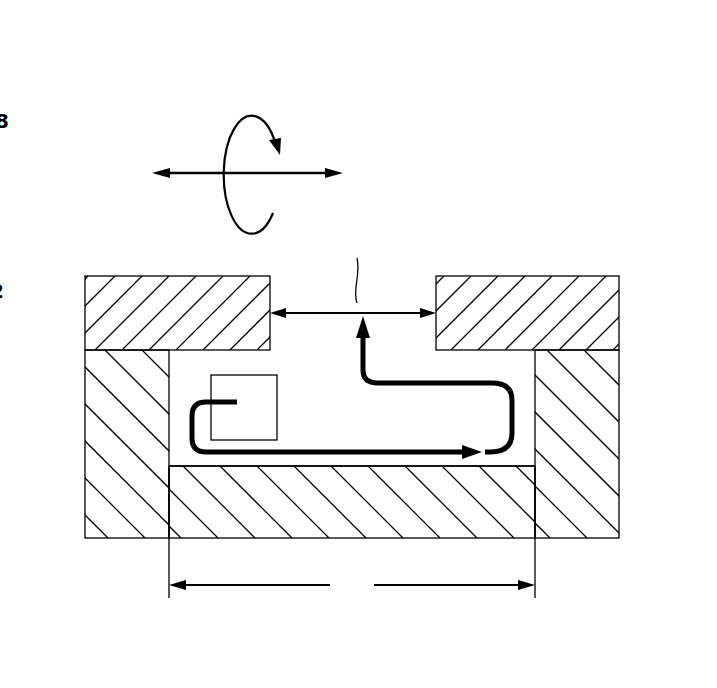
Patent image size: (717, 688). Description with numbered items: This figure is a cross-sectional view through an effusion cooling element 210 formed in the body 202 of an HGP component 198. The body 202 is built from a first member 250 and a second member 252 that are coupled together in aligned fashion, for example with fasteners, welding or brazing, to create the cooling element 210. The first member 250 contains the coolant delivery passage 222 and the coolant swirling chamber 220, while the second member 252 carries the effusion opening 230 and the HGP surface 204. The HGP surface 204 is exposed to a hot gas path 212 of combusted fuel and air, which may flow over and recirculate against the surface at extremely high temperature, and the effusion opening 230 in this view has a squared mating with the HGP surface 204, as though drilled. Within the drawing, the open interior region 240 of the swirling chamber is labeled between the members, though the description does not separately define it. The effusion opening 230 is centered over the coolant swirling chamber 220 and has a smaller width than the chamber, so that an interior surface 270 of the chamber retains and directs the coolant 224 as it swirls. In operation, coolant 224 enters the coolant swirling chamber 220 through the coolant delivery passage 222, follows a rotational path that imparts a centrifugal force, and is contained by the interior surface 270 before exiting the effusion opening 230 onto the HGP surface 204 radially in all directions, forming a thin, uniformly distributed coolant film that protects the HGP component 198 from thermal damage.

The HGP component 198 is at (528, 252).
The body 202 is at (629, 535).
The HGP surface 204 is at (468, 292).
The effusion cooling element 210 is at (410, 263).
The hot gas path 212 is at (322, 145).
The coolant swirling chamber 220 is at (522, 452).
The coolant delivery passage 222 is at (237, 387).
The coolant 224 is at (207, 453).
The effusion opening 230 is at (315, 300).
The cavity 240 is at (379, 427).
The first member 250 is at (101, 437).
The second member 252 is at (101, 320).
The interior surface 270 is at (468, 352).